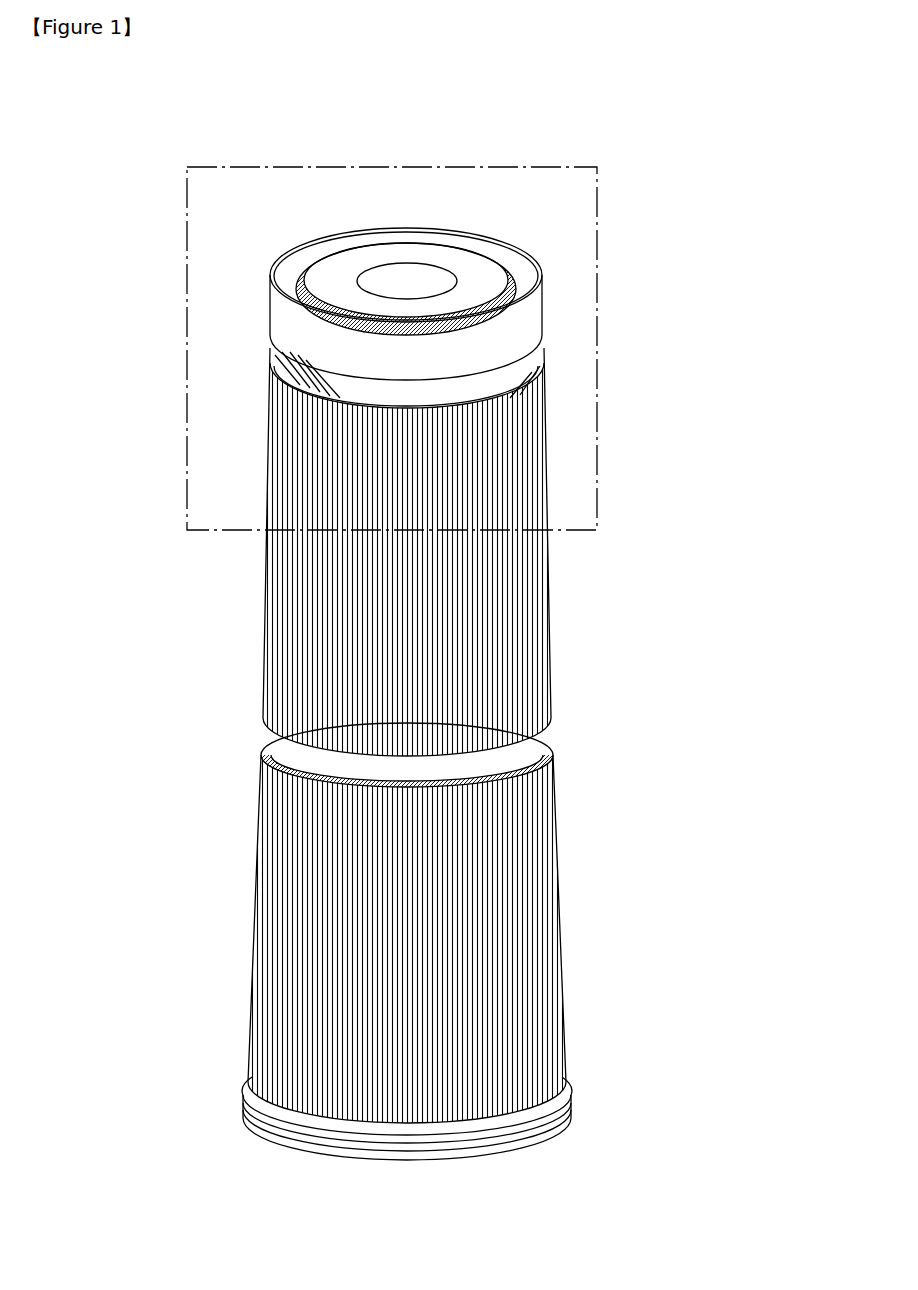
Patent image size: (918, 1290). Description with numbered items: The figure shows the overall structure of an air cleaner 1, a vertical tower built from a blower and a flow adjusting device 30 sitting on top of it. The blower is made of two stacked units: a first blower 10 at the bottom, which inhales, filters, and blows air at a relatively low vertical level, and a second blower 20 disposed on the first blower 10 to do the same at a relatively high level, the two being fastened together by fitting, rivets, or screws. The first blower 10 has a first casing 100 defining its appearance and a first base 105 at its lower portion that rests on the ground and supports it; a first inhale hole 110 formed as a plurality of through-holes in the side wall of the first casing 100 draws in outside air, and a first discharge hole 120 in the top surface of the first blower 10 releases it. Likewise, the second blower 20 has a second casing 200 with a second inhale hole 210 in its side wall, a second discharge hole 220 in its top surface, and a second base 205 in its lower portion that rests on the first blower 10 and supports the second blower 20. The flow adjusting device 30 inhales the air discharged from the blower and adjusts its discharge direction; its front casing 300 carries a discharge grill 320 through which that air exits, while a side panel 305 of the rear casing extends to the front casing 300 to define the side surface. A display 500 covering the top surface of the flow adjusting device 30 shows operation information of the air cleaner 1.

The air cleaner 1 is at (532, 151).
The first blower 10 is at (418, 941).
The second blower 20 is at (413, 564).
The flow adjusting device 30 is at (416, 297).
The first casing 100 is at (254, 893).
The first base 105 is at (557, 1090).
The first inhale hole 110 is at (285, 986).
The first discharge hole 120 is at (272, 748).
The second casing 200 is at (262, 532).
The second base 205 is at (470, 757).
The second inhale hole 210 is at (296, 622).
The second discharge hole 220 is at (292, 378).
The front casing 300 is at (280, 321).
The side panel 305 is at (276, 352).
The discharge grill 320 is at (290, 296).
The display 500 is at (456, 258).